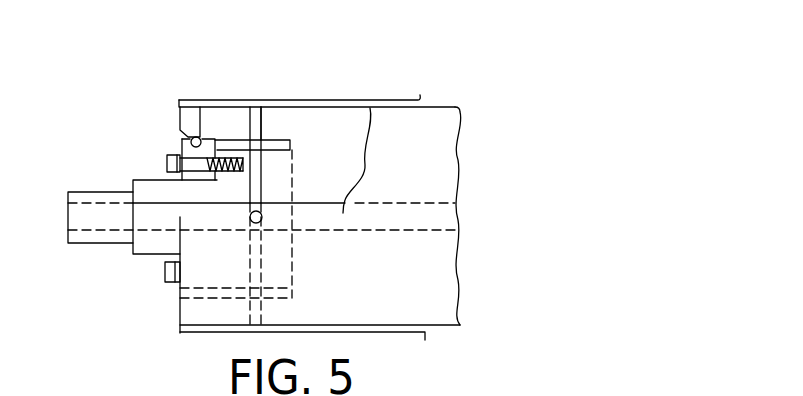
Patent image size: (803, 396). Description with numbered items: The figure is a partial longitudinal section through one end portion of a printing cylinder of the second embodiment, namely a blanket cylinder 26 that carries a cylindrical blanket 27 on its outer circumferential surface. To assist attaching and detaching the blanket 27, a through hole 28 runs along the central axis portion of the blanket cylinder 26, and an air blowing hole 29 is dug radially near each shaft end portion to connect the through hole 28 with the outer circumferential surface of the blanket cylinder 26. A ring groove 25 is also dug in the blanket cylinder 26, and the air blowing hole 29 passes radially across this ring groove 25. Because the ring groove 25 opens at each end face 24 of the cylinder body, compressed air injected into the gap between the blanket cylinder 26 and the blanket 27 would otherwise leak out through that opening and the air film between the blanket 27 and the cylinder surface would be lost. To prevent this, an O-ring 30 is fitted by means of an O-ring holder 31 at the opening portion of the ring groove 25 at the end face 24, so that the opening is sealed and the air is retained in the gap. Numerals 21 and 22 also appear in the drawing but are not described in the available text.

The housing body 21 is at (142, 255).
The mounting plate 22 is at (347, 113).
The end face 24 is at (181, 117).
The ring groove 25 is at (237, 140).
The blanket cylinder 26 is at (440, 118).
The cylindrical blanket 27 is at (272, 100).
The through hole 28 is at (138, 212).
The air blowing hole 29 is at (262, 120).
The O-ring 30 is at (196, 137).
The O-ring holder 31 is at (178, 139).